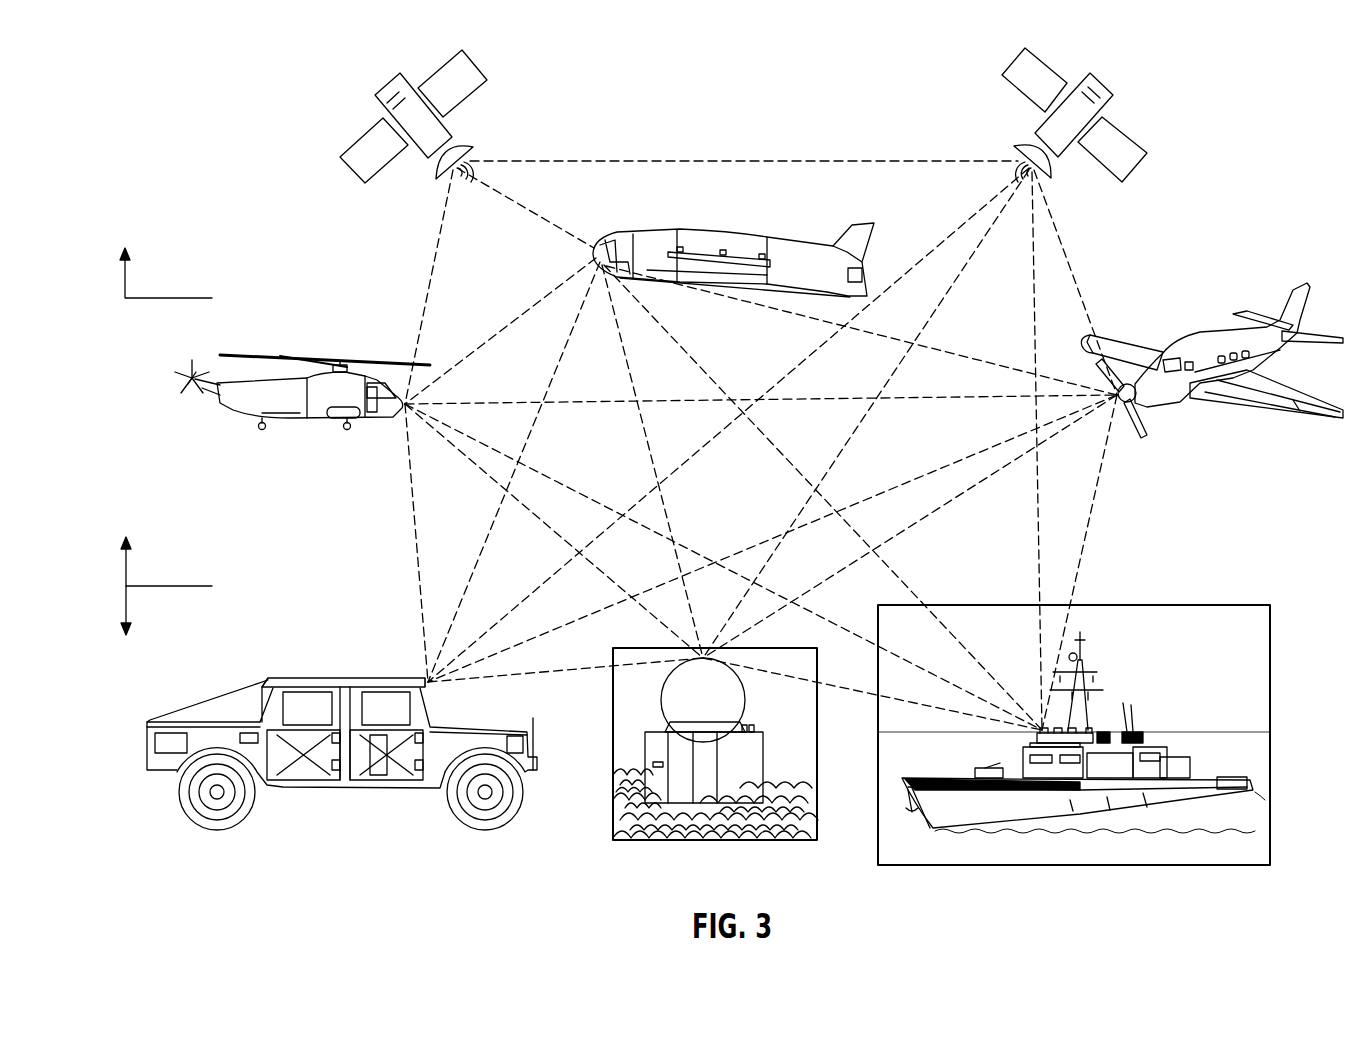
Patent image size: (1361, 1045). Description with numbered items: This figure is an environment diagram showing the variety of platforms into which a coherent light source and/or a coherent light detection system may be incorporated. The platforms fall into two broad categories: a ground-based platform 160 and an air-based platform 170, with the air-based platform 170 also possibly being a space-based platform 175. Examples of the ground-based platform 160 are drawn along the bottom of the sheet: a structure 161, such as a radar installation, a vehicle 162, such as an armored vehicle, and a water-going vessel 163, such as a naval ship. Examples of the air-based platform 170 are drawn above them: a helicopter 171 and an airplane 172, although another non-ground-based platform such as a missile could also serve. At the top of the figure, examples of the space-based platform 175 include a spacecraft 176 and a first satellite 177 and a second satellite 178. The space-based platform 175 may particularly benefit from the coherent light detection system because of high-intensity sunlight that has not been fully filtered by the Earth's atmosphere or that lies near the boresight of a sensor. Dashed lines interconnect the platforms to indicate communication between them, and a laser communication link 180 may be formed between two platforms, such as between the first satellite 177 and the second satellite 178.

The ground-based platform 160 is at (195, 623).
The structure 161 is at (662, 842).
The vehicle 162 is at (327, 678).
The water-going vessel 163 is at (1150, 740).
The air-based platform 170 is at (195, 573).
The helicopter 171 is at (355, 362).
The airplane 172 is at (1205, 345).
The space-based platform 175 is at (195, 283).
The spacecraft 176 is at (785, 250).
The first satellite 177 is at (1014, 62).
The second satellite 178 is at (477, 63).
The laser communication link 180 is at (842, 160).